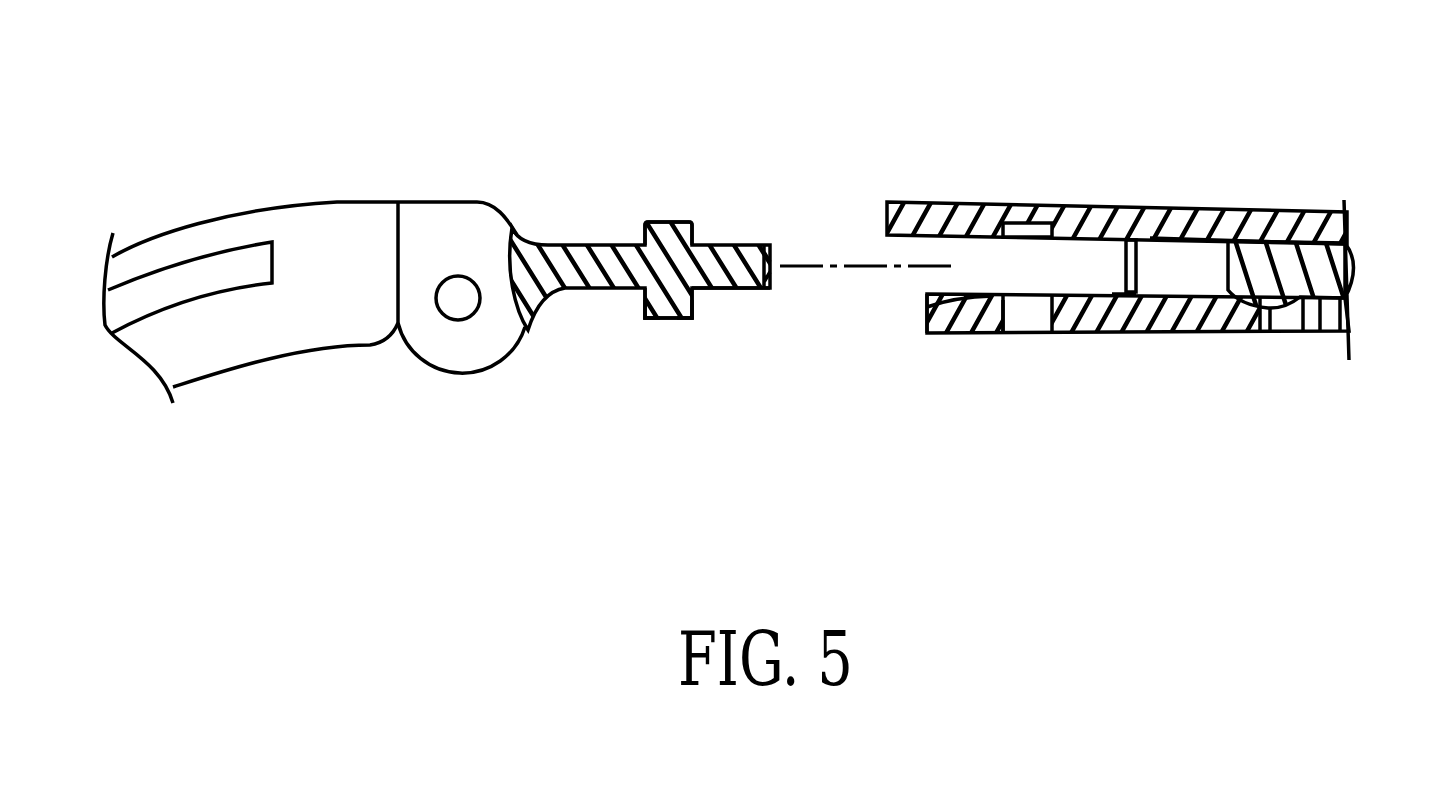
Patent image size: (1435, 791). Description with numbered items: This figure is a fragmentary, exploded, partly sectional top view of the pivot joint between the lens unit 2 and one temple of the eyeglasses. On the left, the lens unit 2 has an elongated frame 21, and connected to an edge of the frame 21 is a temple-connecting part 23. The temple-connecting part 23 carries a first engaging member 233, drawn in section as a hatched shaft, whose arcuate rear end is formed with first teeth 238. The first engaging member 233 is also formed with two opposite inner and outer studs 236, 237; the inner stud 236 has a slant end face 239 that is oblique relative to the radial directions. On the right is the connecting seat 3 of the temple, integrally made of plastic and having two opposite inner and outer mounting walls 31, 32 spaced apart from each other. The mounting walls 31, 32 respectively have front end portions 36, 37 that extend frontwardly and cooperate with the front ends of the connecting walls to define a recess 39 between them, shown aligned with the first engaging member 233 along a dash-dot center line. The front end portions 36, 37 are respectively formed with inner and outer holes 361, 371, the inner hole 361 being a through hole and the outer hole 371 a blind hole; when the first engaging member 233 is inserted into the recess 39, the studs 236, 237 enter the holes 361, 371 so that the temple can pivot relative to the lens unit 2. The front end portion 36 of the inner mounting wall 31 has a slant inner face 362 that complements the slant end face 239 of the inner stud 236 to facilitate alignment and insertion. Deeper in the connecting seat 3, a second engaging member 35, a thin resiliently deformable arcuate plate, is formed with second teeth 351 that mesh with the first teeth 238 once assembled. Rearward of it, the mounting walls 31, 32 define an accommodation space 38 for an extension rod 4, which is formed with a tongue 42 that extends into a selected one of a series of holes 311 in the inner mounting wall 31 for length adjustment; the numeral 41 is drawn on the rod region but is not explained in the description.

The lens unit 2 is at (459, 252).
The frame 21 is at (333, 298).
The temple-connecting part 23 is at (630, 245).
The first engaging member 233 is at (737, 291).
The inner stud 236 is at (655, 318).
The outer stud 237 is at (673, 225).
The first teeth 238 is at (773, 283).
The slant end face 239 is at (686, 317).
The connecting seat 3 is at (1111, 276).
The inner mounting wall 31 is at (1153, 332).
The holes 311 is at (1260, 317).
The outer mounting wall 32 is at (1180, 210).
The second engaging member 35 is at (1132, 290).
The second teeth 351 is at (1106, 295).
The front end portion of inner mounting wall 36 is at (1060, 323).
The inner hole 361 is at (1013, 317).
The slant inner face 362 is at (925, 300).
The front end portion of outer mounting wall 37 is at (1061, 207).
The outer hole 371 is at (1012, 228).
The accommodation space 38 is at (1202, 268).
The recess 39 is at (963, 253).
The extension rod 4 is at (1357, 277).
The housing block 41 is at (1320, 298).
The tongue 42 is at (1270, 308).